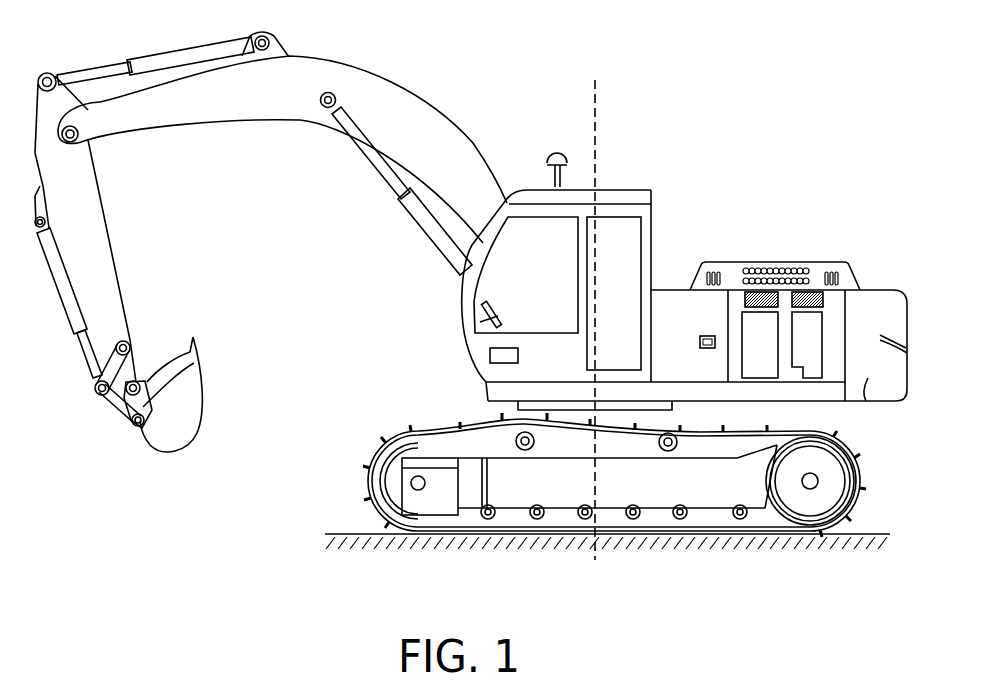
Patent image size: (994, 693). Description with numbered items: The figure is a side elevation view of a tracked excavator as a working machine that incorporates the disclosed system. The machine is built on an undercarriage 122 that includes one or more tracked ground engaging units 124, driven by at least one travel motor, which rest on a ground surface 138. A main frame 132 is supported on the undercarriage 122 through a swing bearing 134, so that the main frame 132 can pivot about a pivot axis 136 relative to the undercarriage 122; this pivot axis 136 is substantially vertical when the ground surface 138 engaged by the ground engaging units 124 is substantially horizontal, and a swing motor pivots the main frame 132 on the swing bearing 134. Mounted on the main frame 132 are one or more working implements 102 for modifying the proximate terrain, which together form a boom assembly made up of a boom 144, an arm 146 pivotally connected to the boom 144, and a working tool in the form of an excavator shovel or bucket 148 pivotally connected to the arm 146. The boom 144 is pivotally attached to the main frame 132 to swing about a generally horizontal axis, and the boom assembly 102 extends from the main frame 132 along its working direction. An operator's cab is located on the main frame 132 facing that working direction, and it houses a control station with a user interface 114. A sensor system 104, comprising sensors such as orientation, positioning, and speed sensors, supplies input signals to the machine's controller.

The working implements 102 is at (425, 80).
The sensor system 104 is at (490, 357).
The user interface 114 is at (487, 312).
The undercarriage 122 is at (905, 463).
The ground engaging units 124 is at (869, 487).
The main frame 132 is at (822, 392).
The swing bearing 134 is at (517, 409).
The pivot axis 136 is at (597, 95).
The ground surface 138 is at (872, 532).
The boom 144 is at (410, 165).
The arm 146 is at (90, 227).
The bucket 148 is at (178, 448).